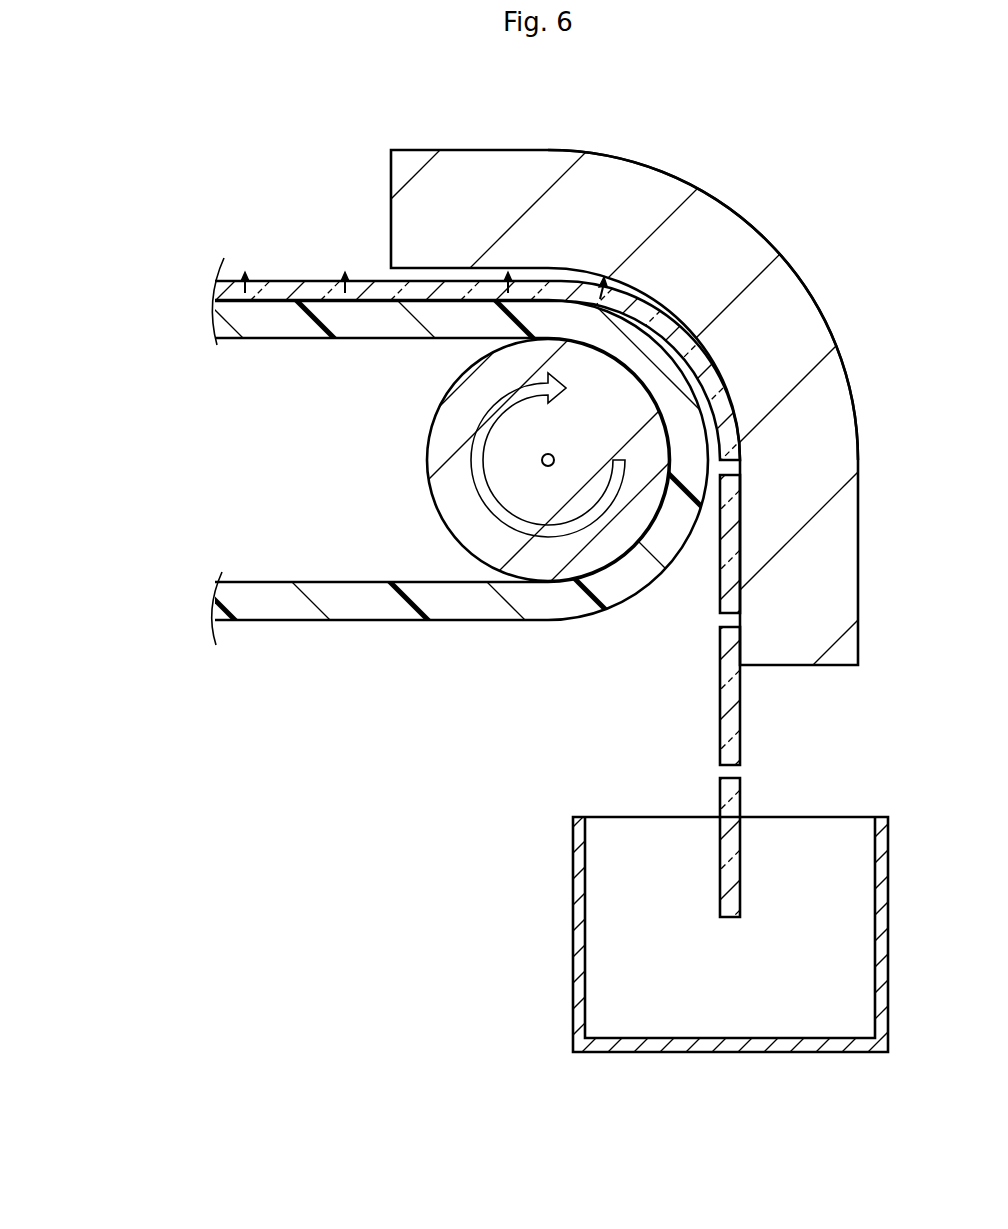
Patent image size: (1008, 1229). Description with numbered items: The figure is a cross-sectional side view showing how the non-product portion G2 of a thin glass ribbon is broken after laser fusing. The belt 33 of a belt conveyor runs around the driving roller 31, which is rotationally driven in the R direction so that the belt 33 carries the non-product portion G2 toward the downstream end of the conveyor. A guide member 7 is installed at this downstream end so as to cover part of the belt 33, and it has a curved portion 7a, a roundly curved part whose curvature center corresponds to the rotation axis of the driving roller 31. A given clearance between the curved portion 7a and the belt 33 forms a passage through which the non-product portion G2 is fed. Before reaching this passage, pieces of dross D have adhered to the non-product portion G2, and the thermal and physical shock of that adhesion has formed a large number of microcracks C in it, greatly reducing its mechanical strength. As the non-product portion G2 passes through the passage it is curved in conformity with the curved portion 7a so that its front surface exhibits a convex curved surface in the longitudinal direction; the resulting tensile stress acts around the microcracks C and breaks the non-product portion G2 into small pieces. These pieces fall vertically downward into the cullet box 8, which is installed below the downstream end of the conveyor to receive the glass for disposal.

The guide member 7 is at (488, 150).
The curved portion 7a is at (798, 272).
The belt 33 is at (297, 341).
The driving roller 31 is at (428, 453).
The R direction R is at (548, 448).
The microcracks C is at (254, 290).
The non-product portion G2 is at (320, 280).
The dross D is at (245, 274).
The cullet box 8 is at (573, 914).